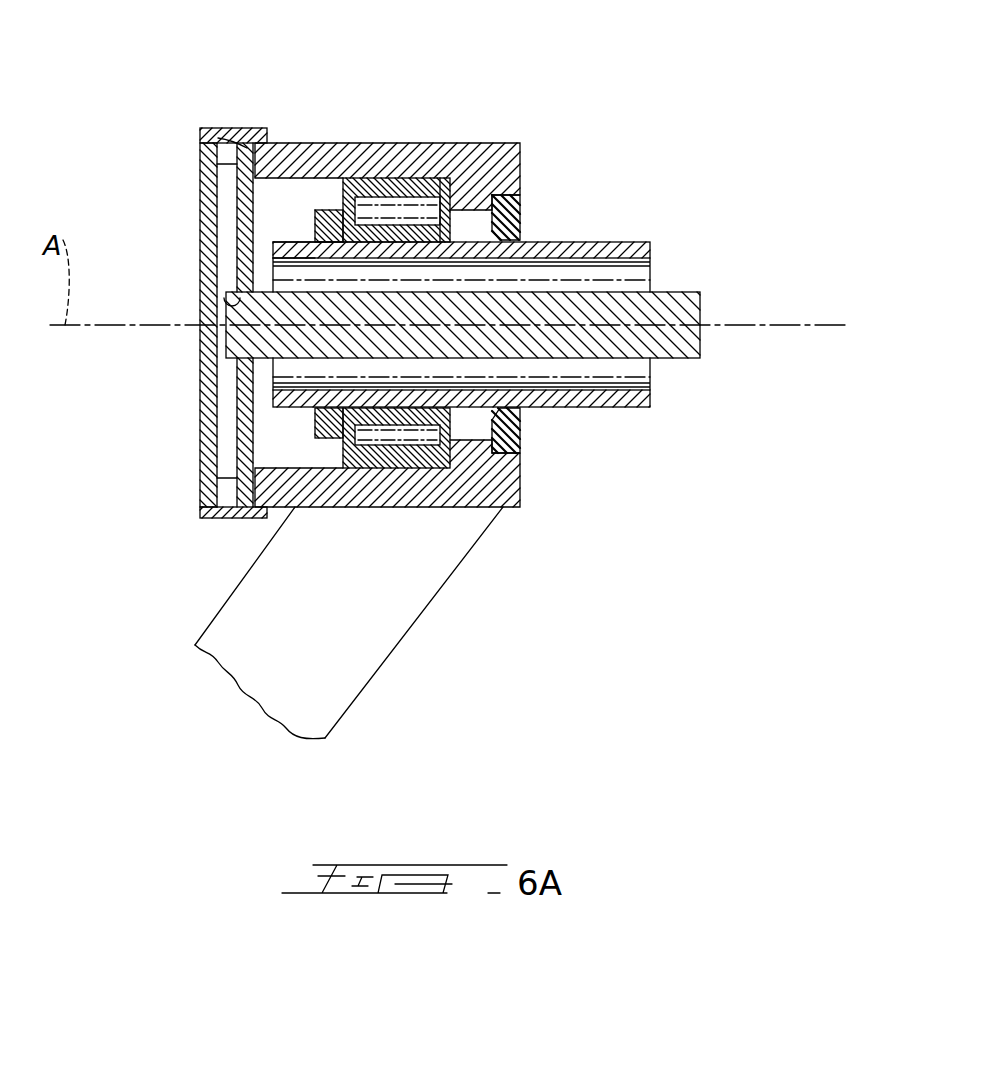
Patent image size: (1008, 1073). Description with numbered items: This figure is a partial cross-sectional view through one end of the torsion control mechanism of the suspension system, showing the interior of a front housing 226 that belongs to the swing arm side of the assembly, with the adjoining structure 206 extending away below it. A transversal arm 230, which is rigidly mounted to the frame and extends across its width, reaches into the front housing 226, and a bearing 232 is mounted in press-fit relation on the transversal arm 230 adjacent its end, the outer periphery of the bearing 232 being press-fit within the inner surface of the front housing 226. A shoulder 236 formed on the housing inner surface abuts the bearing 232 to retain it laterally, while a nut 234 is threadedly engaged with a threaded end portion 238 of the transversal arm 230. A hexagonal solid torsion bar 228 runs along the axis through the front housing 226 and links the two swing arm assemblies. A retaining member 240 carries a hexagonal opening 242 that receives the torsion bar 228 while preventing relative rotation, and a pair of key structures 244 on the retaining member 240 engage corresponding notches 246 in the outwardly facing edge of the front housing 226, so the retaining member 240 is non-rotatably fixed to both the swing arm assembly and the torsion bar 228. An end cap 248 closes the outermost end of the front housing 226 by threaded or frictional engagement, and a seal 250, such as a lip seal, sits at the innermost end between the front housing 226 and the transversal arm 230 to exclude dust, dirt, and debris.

The bracket 206 is at (372, 637).
The front housing 226 is at (462, 143).
The torsion bar 228 is at (680, 292).
The transversal arm 230 is at (600, 243).
The bearing 232 is at (397, 180).
The nut 234 is at (328, 210).
The shoulder 236 is at (437, 182).
The threaded end portion 238 is at (300, 243).
The retaining member 240 is at (218, 128).
The hexagonal opening 242 is at (228, 298).
The key structures 244 is at (255, 130).
The notches 246 is at (237, 164).
The end cap 248 is at (200, 385).
The seal 250 is at (520, 433).